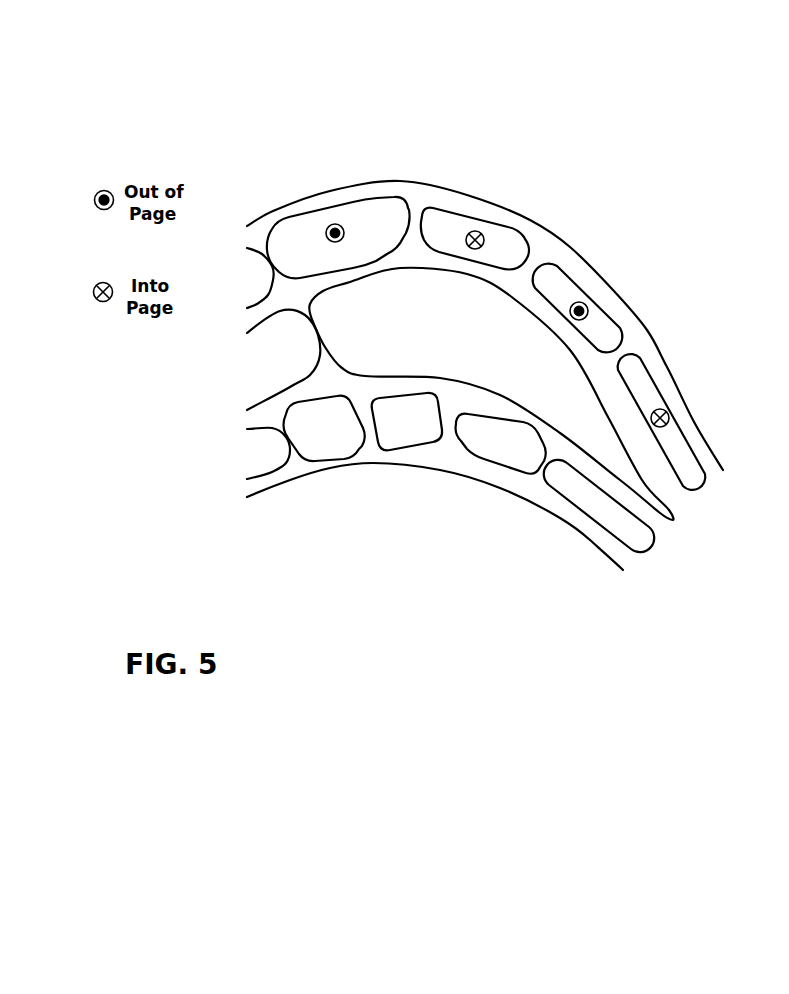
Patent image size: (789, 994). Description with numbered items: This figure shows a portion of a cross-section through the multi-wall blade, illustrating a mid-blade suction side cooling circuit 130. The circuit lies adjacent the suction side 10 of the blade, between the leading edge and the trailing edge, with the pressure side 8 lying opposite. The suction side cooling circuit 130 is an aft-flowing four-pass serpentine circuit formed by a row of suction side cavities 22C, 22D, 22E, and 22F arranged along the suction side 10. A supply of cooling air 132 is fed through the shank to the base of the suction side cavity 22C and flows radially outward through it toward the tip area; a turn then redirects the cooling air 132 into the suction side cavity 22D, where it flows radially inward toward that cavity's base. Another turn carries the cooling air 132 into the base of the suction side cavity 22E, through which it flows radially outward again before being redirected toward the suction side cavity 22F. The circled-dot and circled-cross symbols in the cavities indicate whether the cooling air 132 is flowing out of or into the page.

The pressure side 8 is at (365, 533).
The suction side 10 is at (600, 143).
The mid-blade suction side cooling circuit 130 is at (416, 185).
The cooling air 132 is at (327, 225).
The suction side cavity 22C is at (355, 201).
The suction side cavity 22D is at (502, 223).
The suction side cavity 22E is at (617, 325).
The suction side cavity 22F is at (690, 440).